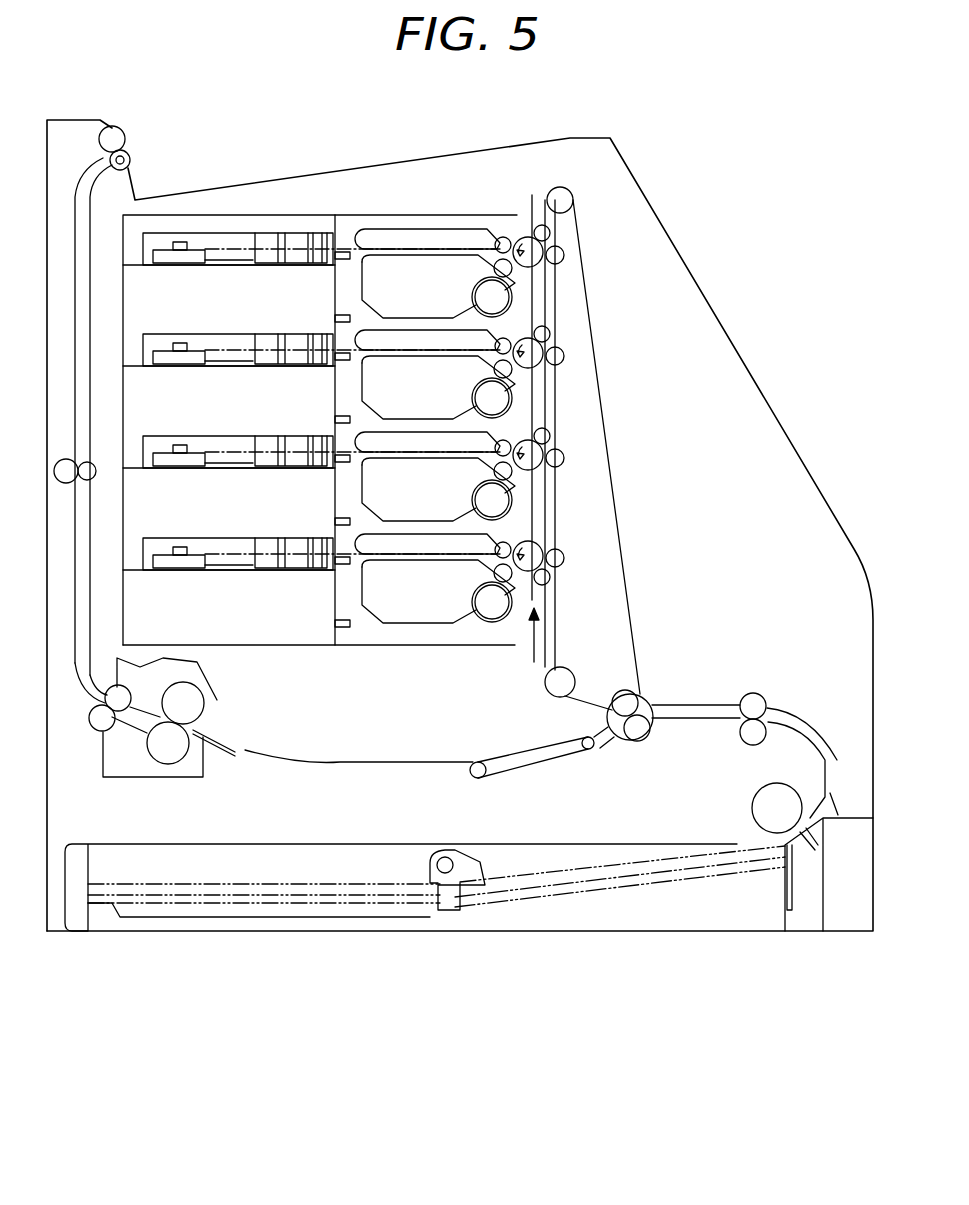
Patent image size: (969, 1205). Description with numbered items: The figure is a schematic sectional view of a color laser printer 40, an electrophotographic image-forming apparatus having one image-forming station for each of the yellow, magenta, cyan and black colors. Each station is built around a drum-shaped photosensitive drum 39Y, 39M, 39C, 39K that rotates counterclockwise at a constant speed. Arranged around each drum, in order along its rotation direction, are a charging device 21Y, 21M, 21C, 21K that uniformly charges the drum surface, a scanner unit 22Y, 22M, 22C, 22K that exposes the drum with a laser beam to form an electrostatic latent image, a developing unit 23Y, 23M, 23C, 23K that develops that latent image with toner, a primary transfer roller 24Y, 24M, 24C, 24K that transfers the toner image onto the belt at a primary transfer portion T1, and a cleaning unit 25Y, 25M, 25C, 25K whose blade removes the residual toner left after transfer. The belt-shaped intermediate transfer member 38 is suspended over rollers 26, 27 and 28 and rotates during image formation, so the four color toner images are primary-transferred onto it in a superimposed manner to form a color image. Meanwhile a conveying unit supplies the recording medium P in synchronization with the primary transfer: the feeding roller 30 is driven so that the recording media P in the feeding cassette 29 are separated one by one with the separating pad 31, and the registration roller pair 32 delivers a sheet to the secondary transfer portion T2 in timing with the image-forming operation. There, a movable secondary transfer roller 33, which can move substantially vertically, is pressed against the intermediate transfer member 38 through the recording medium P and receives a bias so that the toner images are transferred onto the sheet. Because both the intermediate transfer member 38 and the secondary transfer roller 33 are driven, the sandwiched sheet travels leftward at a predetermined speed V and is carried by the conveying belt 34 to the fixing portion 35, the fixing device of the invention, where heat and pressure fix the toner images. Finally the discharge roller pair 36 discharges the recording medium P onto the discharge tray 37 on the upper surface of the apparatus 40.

The charging device 21K is at (512, 240).
The charging device 21C is at (525, 334).
The charging device 21M is at (525, 436).
The charging device 21Y is at (525, 537).
The scanner unit 22K is at (138, 247).
The scanner unit 22C is at (138, 348).
The scanner unit 22M is at (138, 450).
The scanner unit 22Y is at (138, 552).
The developing unit 23K is at (362, 283).
The developing unit 23C is at (362, 386).
The developing unit 23M is at (362, 491).
The developing unit 23Y is at (362, 596).
The primary transfer roller 24K is at (564, 257).
The primary transfer roller 24C is at (564, 359).
The primary transfer roller 24M is at (564, 461).
The primary transfer roller 24Y is at (564, 559).
The cleaning unit 25K is at (390, 228).
The cleaning unit 25C is at (360, 332).
The cleaning unit 25M is at (360, 434).
The cleaning unit 25Y is at (360, 536).
The roller 26 is at (560, 187).
The roller 27 is at (620, 692).
The roller 28 is at (545, 684).
The feeding cassette 29 is at (635, 931).
The feeding roller 30 is at (752, 806).
The separating pad 31 is at (813, 850).
The registration roller pair 32 is at (755, 692).
The secondary transfer roller 33 is at (638, 742).
The conveying belt 34 is at (508, 750).
The fixing portion 35 is at (150, 777).
The discharge roller pair 36 is at (127, 148).
The discharge tray 37 is at (350, 165).
The intermediate transfer member 38 is at (545, 622).
The photosensitive drum 39K is at (551, 236).
The photosensitive drum 39C is at (548, 340).
The photosensitive drum 39M is at (548, 442).
The photosensitive drum 39Y is at (551, 579).
The color laser printer 40 is at (490, 957).
The primary transfer portion T1 is at (536, 235).
The secondary transfer portion T2 is at (648, 706).
The recording medium P is at (393, 905).
The predetermined speed V is at (425, 788).